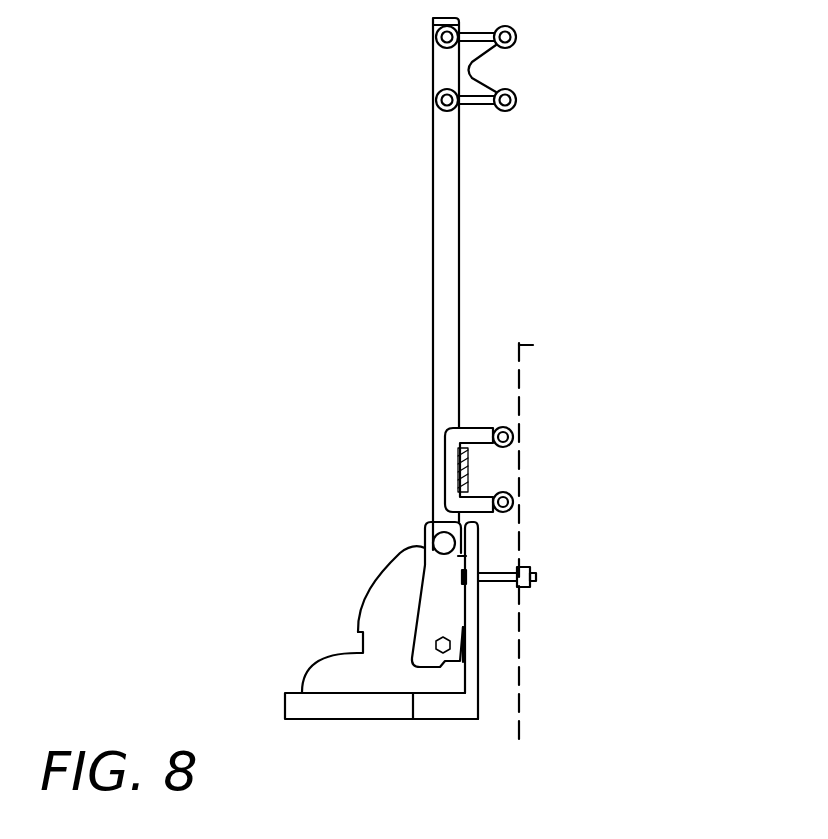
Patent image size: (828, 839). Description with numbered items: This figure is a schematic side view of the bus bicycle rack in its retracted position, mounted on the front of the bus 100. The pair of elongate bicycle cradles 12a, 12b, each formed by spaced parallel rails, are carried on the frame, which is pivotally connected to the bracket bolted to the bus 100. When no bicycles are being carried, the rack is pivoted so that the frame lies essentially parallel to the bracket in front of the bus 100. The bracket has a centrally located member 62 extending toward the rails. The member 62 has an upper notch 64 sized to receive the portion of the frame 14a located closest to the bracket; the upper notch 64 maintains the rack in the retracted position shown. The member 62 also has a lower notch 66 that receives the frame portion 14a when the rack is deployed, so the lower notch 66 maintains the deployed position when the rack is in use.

The bicycle cradle 12b is at (488, 109).
The bicycle cradle 12a is at (473, 428).
The bus 100 is at (521, 362).
The portion of the frame 14a is at (448, 538).
The upper notch 64 is at (422, 562).
The member 62 is at (370, 587).
The lower notch 66 is at (357, 637).